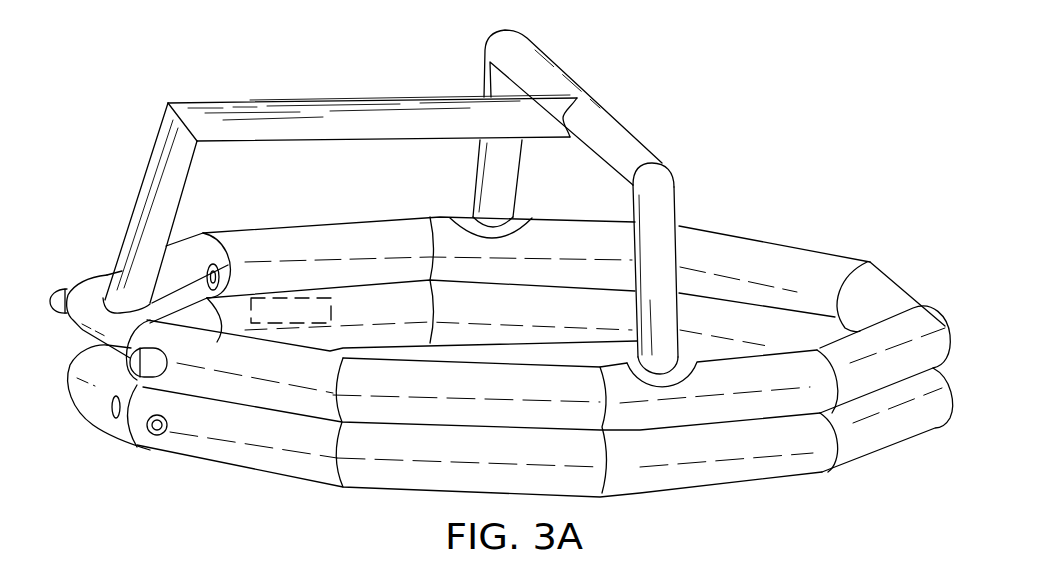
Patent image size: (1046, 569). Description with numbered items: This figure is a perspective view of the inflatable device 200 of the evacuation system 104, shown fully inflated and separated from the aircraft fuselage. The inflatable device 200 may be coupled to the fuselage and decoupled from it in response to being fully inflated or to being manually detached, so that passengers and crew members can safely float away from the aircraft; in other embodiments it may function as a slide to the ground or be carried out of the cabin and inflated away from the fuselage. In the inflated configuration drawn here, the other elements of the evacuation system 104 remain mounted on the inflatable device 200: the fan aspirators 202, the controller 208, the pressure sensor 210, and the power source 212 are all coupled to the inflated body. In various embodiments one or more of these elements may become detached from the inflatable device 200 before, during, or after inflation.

The evacuation system 104 is at (199, 44).
The inflatable device 200 is at (735, 238).
The fan aspirator 202 is at (57, 289).
The controller 208 is at (214, 268).
The pressure sensor 210 is at (157, 430).
The power source 212 is at (291, 311).